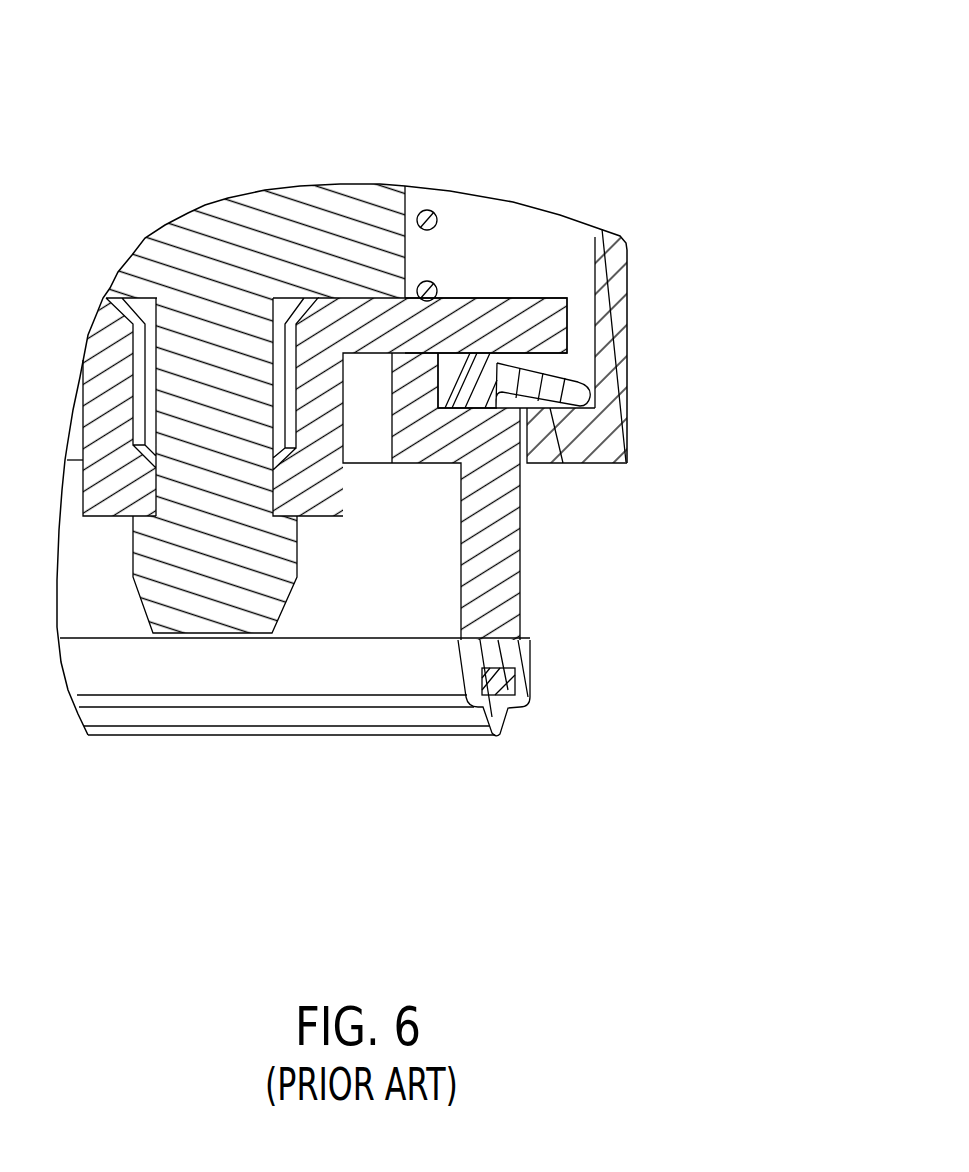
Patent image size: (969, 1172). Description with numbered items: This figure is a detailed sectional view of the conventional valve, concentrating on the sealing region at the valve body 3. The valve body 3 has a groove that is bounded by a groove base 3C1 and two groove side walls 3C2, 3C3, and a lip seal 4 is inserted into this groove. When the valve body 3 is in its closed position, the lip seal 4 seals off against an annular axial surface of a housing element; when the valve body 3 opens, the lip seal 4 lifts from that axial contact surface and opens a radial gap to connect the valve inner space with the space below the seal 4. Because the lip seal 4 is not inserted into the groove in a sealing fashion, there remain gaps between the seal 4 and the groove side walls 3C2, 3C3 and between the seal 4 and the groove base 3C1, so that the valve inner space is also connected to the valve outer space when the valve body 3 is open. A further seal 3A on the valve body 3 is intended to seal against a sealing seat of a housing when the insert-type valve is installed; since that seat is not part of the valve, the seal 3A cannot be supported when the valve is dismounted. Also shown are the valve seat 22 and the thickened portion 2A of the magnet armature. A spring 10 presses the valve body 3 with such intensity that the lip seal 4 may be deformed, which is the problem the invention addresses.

The spring 10 is at (427, 218).
The valve body 3 is at (347, 488).
The seal 3A is at (507, 730).
The groove base 3C1 is at (443, 368).
The groove side wall 3C2 is at (480, 398).
The groove side wall 3C3 is at (543, 343).
The seal 4 is at (570, 392).
The valve seat 22 is at (577, 442).
The thickened portion 2A is at (252, 602).